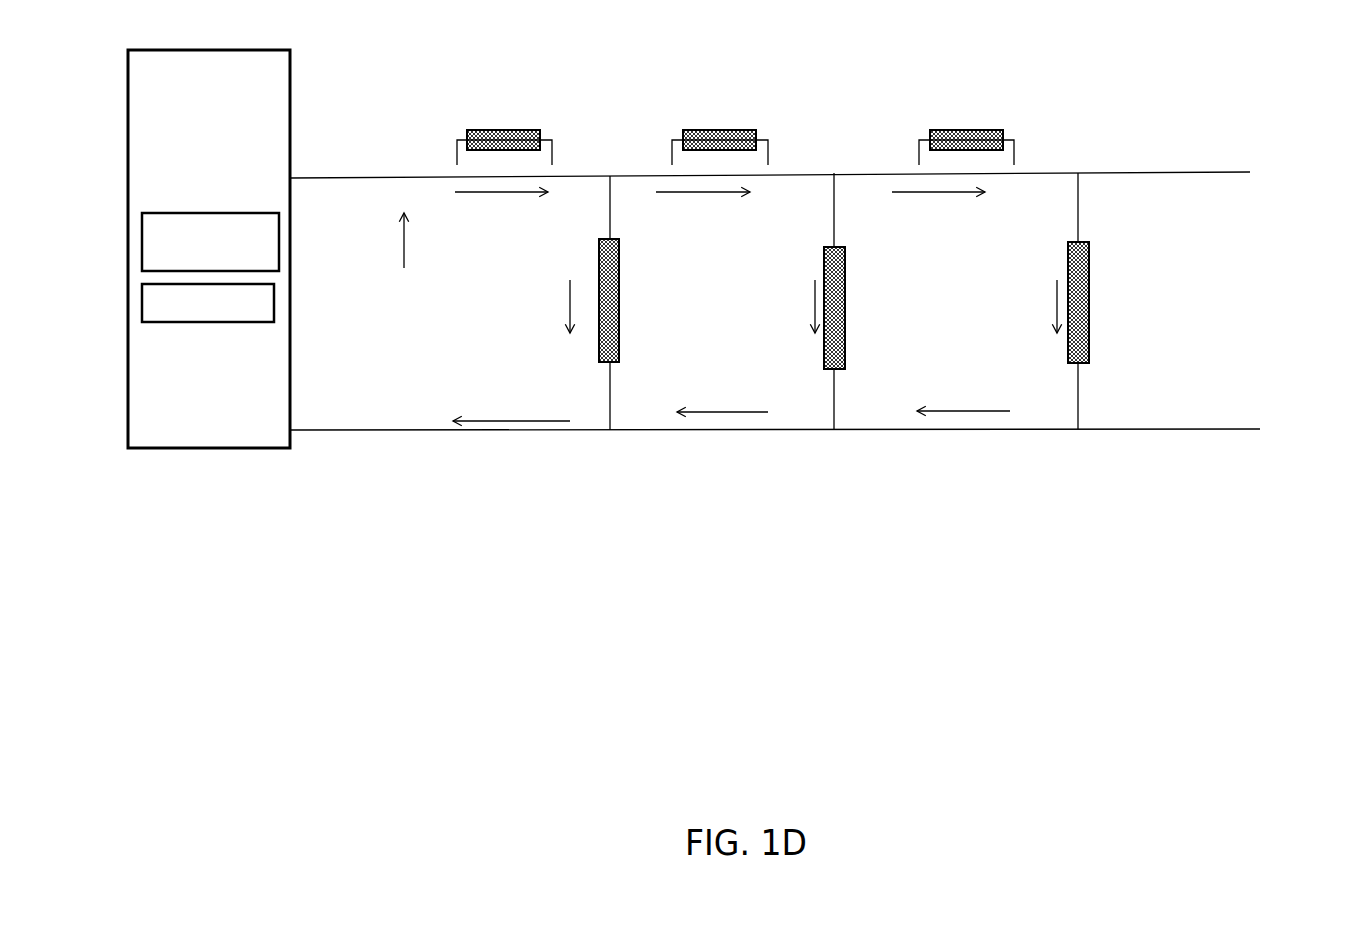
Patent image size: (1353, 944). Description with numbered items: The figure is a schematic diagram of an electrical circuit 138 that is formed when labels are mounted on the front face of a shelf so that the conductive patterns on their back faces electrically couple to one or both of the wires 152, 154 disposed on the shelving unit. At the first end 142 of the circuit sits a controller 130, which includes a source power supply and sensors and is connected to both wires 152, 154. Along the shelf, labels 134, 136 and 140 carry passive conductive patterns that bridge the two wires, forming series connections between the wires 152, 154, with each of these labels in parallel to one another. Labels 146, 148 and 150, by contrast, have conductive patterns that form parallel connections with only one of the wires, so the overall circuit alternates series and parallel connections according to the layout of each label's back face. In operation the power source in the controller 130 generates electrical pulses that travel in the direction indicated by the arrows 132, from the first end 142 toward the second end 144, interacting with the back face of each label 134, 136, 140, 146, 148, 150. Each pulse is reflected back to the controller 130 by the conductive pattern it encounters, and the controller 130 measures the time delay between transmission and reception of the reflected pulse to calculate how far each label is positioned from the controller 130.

The controller 130 is at (209, 249).
The arrows 132 is at (408, 212).
The label 134 is at (609, 237).
The label 136 is at (814, 262).
The electrical circuit 138 is at (834, 173).
The label 140 is at (1088, 295).
The first end 142 is at (355, 383).
The second end 144 is at (1109, 359).
The label 146 is at (503, 130).
The label 148 is at (720, 128).
The label 150 is at (970, 130).
The wire 152 is at (1209, 172).
The wire 154 is at (1231, 429).